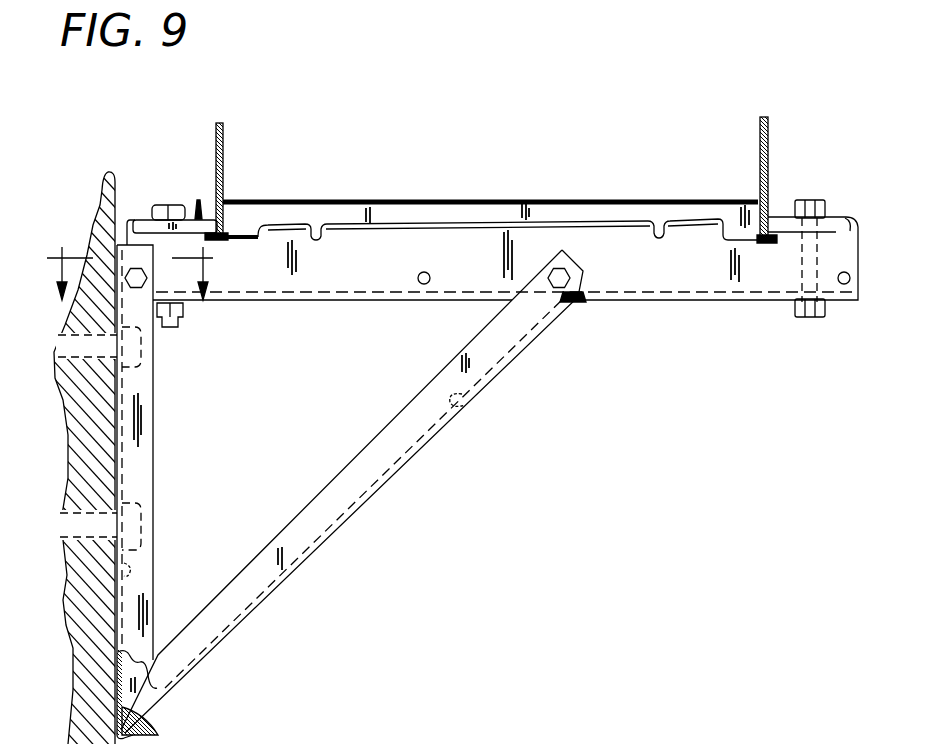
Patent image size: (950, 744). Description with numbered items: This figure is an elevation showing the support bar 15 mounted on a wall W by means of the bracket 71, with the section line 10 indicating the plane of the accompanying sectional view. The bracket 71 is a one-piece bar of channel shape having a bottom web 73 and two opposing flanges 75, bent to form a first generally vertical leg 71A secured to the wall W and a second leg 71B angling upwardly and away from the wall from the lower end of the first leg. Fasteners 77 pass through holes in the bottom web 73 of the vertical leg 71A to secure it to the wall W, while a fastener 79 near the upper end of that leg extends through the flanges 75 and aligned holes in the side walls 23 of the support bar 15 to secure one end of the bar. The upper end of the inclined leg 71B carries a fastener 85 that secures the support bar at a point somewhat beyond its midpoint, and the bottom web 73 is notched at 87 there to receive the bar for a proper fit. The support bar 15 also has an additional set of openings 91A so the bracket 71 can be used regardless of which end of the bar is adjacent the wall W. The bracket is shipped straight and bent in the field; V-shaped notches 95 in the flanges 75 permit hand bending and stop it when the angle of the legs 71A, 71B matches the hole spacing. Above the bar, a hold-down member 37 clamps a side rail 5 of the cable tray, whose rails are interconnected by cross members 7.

The wall W is at (118, 193).
The side rails 5 is at (230, 153).
The cross members 7 is at (394, 200).
The hold-down member 37 is at (199, 205).
The section line 10 is at (133, 273).
The fastener 79 is at (140, 278).
The additional openings 91A is at (424, 284).
The fastener 85 is at (559, 278).
The notch 87 is at (574, 298).
The support bar 15 is at (623, 310).
The side walls 23 is at (771, 288).
The fasteners 77 is at (147, 354).
The first vertical leg 71A is at (153, 437).
The flanges 75 is at (137, 483).
The bottom web 73 is at (470, 398).
The second inclined leg 71B is at (421, 448).
The bracket 71 is at (360, 514).
The V-shaped notches 95 is at (155, 718).